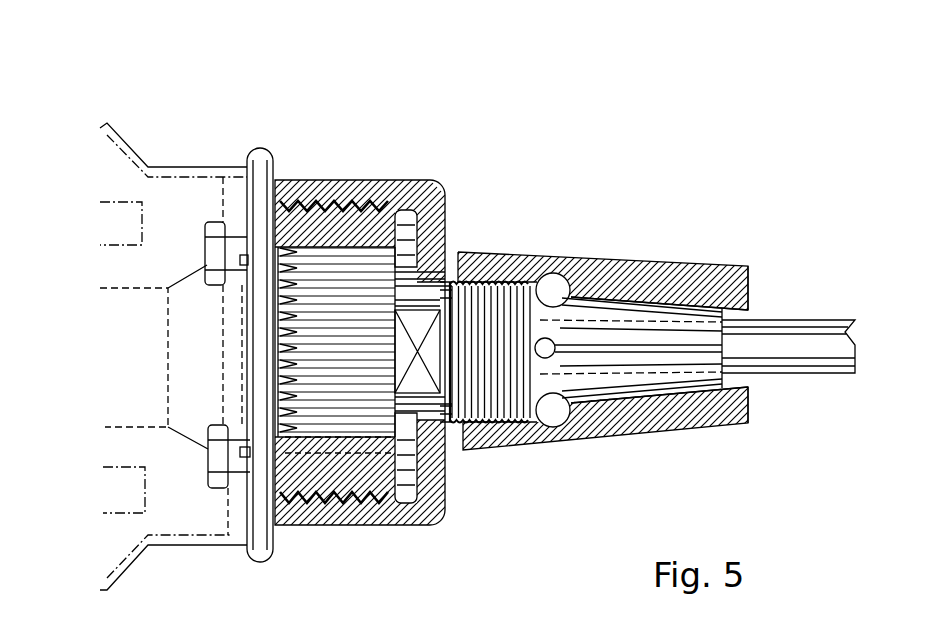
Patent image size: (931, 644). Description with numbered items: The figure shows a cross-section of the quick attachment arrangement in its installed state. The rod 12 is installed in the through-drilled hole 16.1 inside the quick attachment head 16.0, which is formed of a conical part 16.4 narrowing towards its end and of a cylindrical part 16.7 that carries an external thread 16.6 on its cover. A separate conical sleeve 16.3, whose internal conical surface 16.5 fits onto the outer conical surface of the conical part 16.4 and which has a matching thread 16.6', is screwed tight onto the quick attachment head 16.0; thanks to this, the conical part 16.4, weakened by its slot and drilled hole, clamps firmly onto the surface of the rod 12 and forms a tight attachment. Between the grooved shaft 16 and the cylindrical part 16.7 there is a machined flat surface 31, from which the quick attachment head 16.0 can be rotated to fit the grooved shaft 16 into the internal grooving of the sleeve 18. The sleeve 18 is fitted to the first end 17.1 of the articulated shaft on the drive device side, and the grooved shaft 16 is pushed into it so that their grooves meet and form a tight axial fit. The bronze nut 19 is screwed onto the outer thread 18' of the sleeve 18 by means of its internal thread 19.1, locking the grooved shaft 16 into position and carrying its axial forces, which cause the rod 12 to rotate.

The rod 12 is at (790, 347).
The grooved shaft 16 is at (373, 300).
The quick attachment head 16.0 is at (613, 383).
The through-drilled hole 16.1 is at (602, 333).
The conical sleeve 16.3 is at (652, 275).
The conical part 16.4 is at (690, 308).
The internal conical surface 16.5 is at (655, 390).
The external thread 16.6 is at (533, 265).
The thread 16.6' is at (506, 291).
The cylindrical part 16.7 is at (485, 398).
The first end 17.1 is at (188, 135).
The sleeve 18 is at (373, 275).
The outer thread 18' is at (334, 290).
The bronze nut 19 is at (350, 525).
The internal thread 19.1 is at (300, 215).
The machined flat surface 31 is at (414, 383).